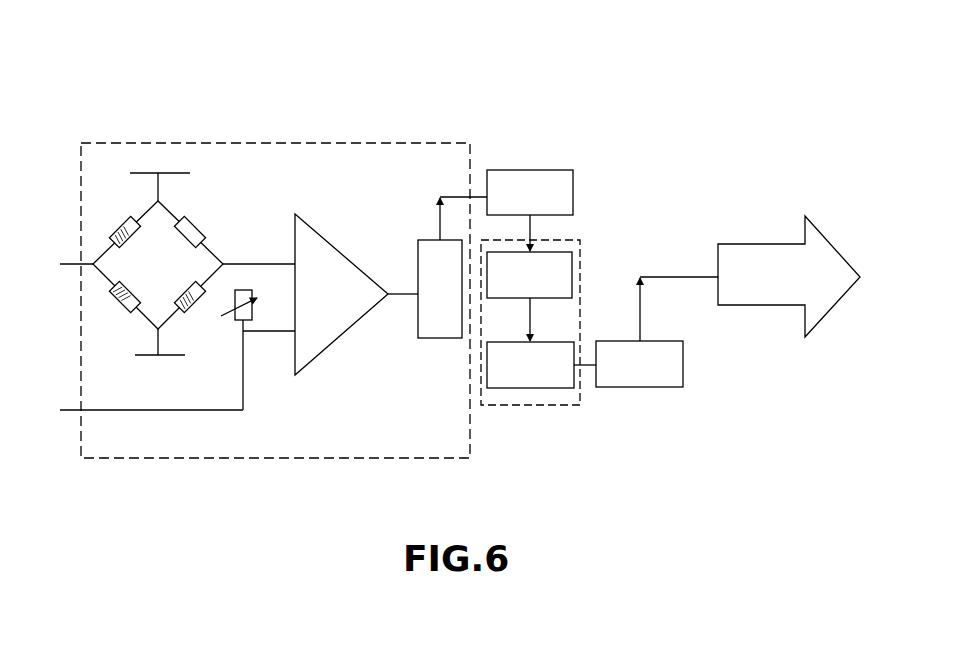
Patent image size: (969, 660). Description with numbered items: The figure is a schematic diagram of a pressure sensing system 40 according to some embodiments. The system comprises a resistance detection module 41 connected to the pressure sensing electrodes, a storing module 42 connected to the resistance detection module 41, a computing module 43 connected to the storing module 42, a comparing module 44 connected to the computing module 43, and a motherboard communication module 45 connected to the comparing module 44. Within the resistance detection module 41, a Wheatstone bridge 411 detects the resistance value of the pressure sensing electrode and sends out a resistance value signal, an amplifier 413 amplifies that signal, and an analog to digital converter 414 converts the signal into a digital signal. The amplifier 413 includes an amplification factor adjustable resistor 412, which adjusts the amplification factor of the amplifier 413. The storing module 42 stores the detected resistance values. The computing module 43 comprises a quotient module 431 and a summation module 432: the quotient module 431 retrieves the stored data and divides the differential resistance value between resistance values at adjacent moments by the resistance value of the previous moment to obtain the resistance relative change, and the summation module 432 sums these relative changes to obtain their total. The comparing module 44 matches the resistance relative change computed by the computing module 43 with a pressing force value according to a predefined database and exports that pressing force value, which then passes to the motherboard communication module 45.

The pressure sensing system 40 is at (462, 36).
The resistance detection module 41 is at (284, 143).
The Wheatstone bridge 411 is at (172, 207).
The amplification factor adjustable resistor 412 is at (248, 290).
The amplifier 413 is at (333, 345).
The analog to digital converter 414 is at (418, 240).
The storing module 42 is at (546, 170).
The computing module 43 is at (580, 298).
The quotient module 431 is at (572, 268).
The summation module 432 is at (523, 388).
The comparing module 44 is at (652, 388).
The motherboard communication module 45 is at (745, 305).